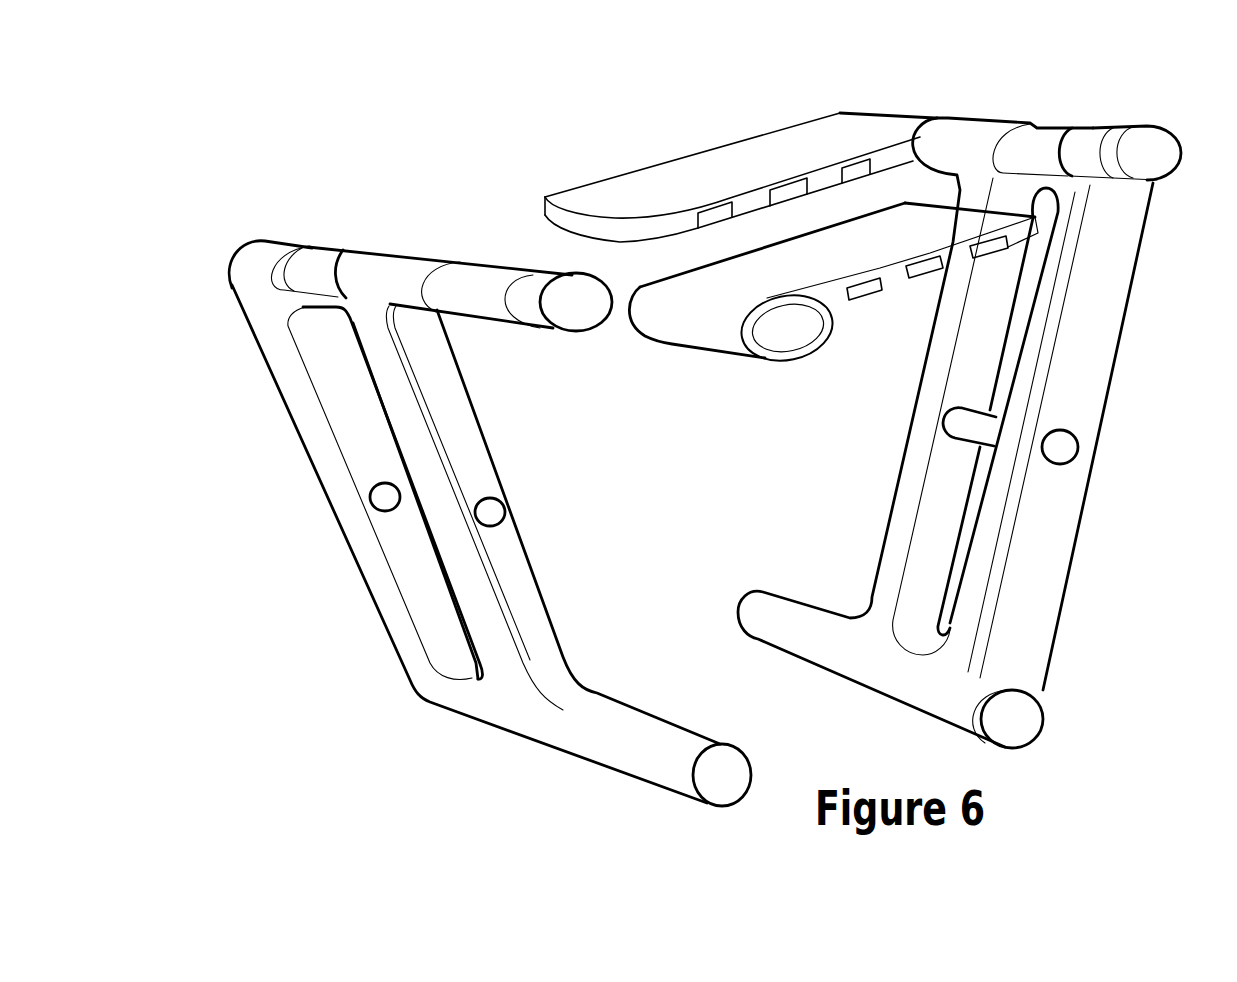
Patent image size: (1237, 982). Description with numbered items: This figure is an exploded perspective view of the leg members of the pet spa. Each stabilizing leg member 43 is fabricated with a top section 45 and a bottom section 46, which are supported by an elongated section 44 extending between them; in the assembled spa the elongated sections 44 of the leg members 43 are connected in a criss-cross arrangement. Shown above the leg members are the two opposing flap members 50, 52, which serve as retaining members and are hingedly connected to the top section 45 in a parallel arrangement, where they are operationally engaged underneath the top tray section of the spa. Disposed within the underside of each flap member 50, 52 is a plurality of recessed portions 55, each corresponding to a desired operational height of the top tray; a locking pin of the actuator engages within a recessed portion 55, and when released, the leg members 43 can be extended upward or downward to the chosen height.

The stabilizing leg member 43 is at (1040, 567).
The elongated section 44 is at (357, 527).
The top section 45 is at (234, 260).
The bottom section 46 is at (612, 745).
The flap member 50 is at (693, 168).
The flap member 52 is at (893, 232).
The recessed portion 55 is at (723, 218).